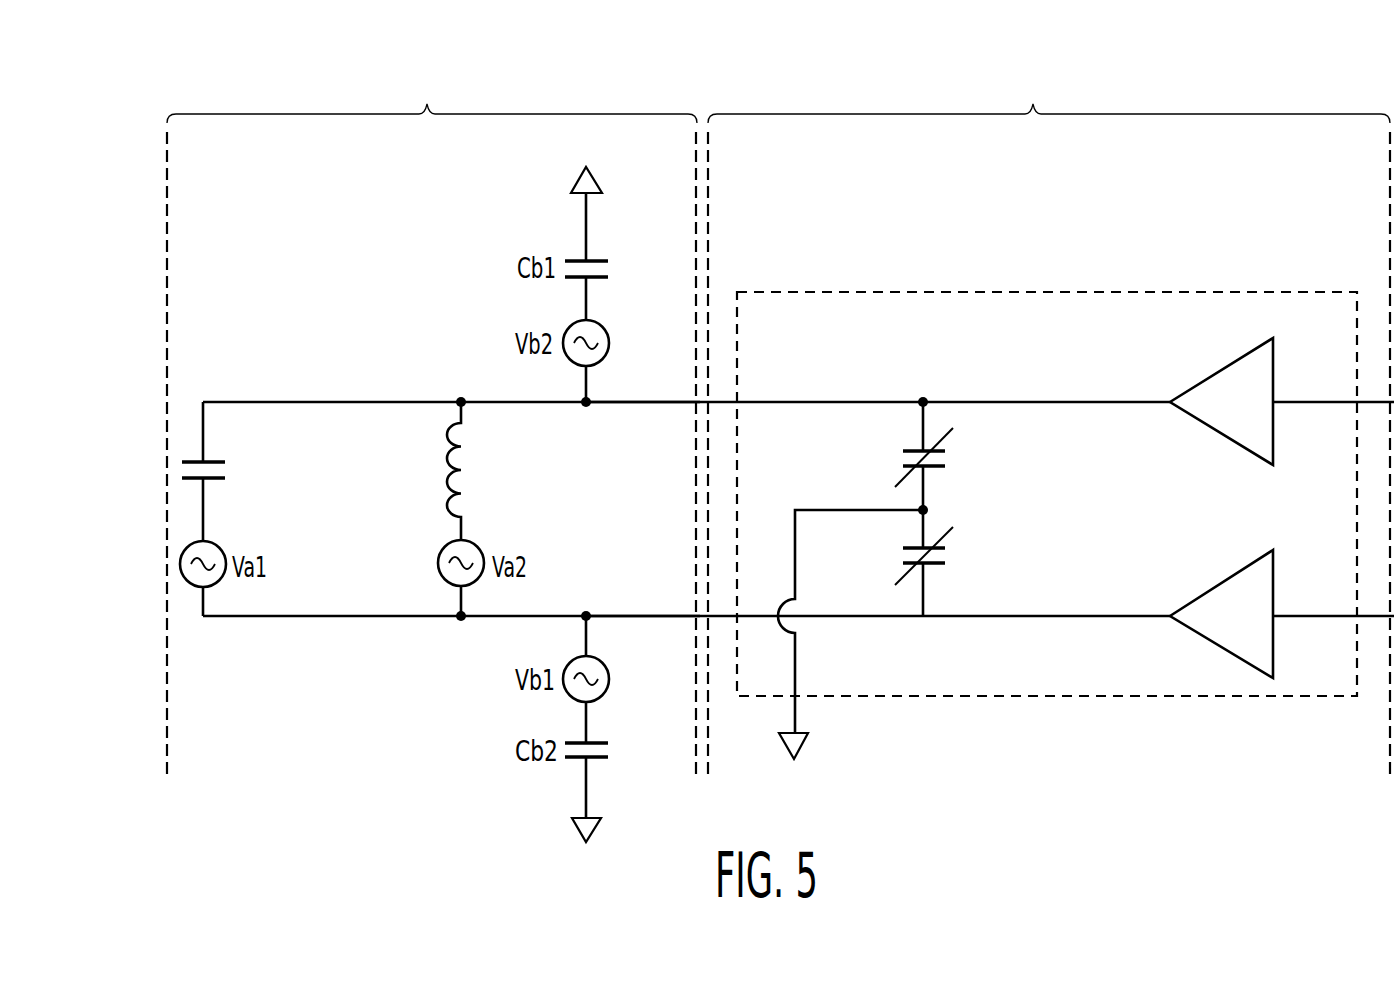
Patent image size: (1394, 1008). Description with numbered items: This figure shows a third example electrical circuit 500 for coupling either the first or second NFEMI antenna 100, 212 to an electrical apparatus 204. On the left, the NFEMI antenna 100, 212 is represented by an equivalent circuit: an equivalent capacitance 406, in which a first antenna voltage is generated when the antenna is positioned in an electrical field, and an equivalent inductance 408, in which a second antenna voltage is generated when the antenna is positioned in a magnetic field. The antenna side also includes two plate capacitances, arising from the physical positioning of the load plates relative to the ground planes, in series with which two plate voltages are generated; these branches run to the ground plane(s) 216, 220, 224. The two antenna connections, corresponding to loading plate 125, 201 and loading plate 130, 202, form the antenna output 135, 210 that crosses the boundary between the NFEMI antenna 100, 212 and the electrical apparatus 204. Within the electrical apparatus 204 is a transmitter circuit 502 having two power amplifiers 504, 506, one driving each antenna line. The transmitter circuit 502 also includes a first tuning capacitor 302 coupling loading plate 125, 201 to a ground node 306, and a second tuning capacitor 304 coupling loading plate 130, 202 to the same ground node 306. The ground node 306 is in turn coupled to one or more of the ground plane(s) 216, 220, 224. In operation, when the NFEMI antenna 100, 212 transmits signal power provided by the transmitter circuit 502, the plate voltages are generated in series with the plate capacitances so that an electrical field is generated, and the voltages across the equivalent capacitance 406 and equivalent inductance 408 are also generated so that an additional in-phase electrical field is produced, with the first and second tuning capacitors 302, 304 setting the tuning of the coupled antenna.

The third example electrical circuit 500 is at (128, 102).
The NFEMI antenna 100 is at (433, 79).
The NFEMI antenna 212 is at (527, 83).
The electrical apparatus 204 is at (1168, 83).
The ground plane 216 is at (683, 505).
The ground plane 220 is at (683, 505).
The ground plane 224 is at (576, 183).
The transmitter circuit 502 is at (1010, 292).
The loading plate 125 is at (686, 351).
The loading plate 201 is at (343, 402).
The loading plate 130 is at (686, 670).
The loading plate 202 is at (340, 620).
The antenna feed output 135 is at (638, 509).
The antenna output 210 is at (642, 402).
The equivalent capacitance (Ca) 406 is at (268, 472).
The equivalent inductance (La) 408 is at (498, 472).
The first tuning capacitor 302 is at (905, 447).
The second tuning capacitor 304 is at (903, 566).
The ground node 306 is at (930, 512).
The power amplifier 504 is at (1197, 385).
The power amplifier 506 is at (1200, 596).